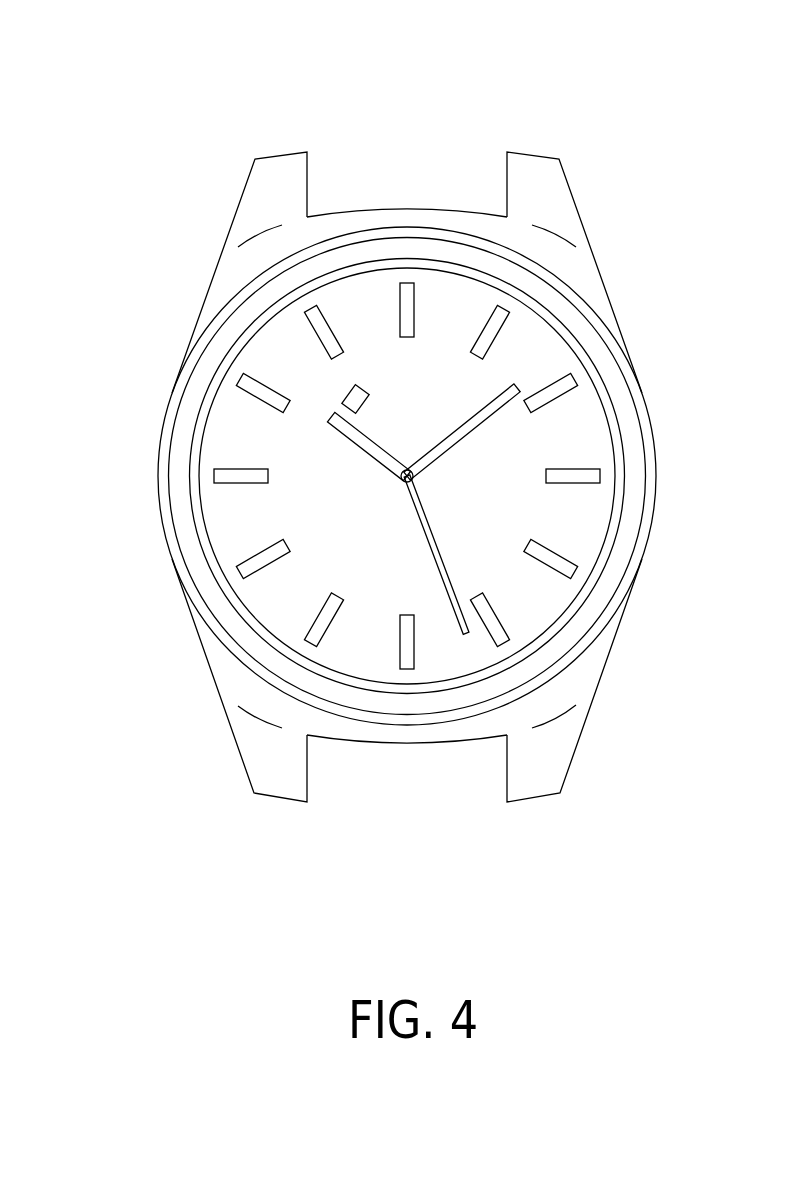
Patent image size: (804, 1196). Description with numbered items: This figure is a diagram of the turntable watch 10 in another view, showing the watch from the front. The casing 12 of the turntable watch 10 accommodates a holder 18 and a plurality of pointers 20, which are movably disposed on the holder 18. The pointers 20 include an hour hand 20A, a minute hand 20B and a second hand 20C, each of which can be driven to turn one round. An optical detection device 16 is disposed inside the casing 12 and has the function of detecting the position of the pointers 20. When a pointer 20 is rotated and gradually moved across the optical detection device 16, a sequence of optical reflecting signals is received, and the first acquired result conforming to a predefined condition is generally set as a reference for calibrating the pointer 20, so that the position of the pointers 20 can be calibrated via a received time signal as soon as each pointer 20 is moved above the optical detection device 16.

The turntable watch 10 is at (600, 90).
The casing 12 is at (583, 276).
The optical detection device 16 is at (359, 381).
The holder 18 is at (572, 518).
The pointers 20 is at (409, 607).
The hour hand 20A is at (349, 433).
The minute hand 20B is at (481, 420).
The second hand 20C is at (453, 596).